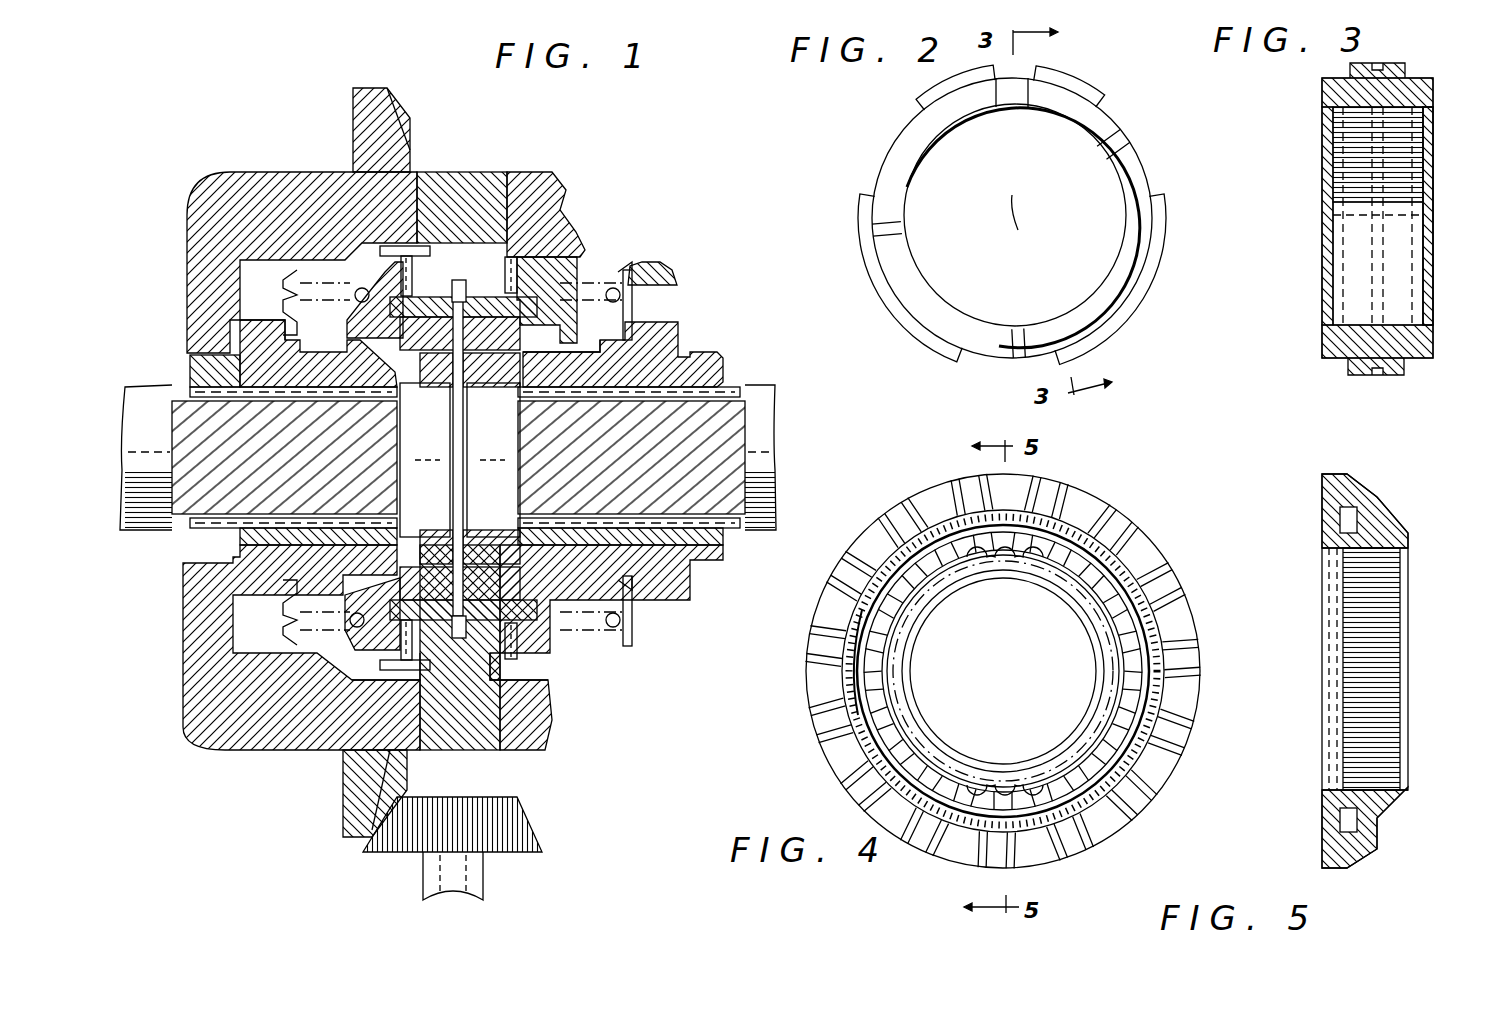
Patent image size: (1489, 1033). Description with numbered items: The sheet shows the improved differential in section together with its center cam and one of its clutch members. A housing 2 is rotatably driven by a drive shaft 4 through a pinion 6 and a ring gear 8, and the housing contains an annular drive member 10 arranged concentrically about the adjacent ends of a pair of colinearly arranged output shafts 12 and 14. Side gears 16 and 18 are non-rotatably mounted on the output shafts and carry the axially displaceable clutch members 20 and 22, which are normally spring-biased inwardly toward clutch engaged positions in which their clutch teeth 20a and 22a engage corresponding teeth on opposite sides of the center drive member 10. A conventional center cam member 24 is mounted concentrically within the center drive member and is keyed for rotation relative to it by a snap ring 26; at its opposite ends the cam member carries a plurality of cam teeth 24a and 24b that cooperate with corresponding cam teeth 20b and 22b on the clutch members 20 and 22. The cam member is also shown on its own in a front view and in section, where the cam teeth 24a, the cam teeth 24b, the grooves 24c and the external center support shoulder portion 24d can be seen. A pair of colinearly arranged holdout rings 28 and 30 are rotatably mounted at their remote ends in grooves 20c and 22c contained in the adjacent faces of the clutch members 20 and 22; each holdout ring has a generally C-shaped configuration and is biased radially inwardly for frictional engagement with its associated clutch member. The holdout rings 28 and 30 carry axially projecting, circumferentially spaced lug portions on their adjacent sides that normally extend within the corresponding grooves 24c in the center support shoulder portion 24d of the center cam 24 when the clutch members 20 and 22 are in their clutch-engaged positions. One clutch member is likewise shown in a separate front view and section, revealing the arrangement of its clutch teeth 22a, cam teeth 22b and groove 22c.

In FIG. 1, the housing 2 is at (232, 172).
In FIG. 1, the drive shaft 4 is at (485, 870).
In FIG. 1, the pinion 6 is at (510, 810).
In FIG. 1, the ring gear 8 is at (345, 776).
In FIG. 1, the annular drive member 10 is at (486, 172).
In FIG. 1, the output shaft 12 is at (150, 530).
In FIG. 1, the output shaft 14 is at (748, 530).
In FIG. 1, the side gear 16 is at (247, 373).
In FIG. 1, the side gear 18 is at (700, 376).
In FIG. 1, the clutch member 20 is at (383, 290).
In FIG. 1, the clutch teeth 20a is at (418, 262).
In FIG. 1, the cam teeth 20b is at (312, 349).
In FIG. 1, the groove 20c is at (386, 666).
In FIG. 1, the clutch member 22 is at (556, 276).
In FIG. 4, the clutch member 22 is at (1078, 500).
In FIG. 5, the clutch member 22 is at (1380, 535).
In FIG. 1, the clutch teeth 22a is at (500, 280).
In FIG. 4, the clutch teeth 22a is at (1130, 565).
In FIG. 5, the clutch teeth 22a is at (1324, 484).
In FIG. 1, the cam teeth 22b is at (561, 359).
In FIG. 4, the cam teeth 22b is at (940, 610).
In FIG. 5, the cam teeth 22b is at (1324, 806).
In FIG. 1, the groove 22c is at (522, 666).
In FIG. 4, the groove 22c is at (845, 685).
In FIG. 5, the groove 22c is at (1340, 828).
In FIG. 1, the center cam member 24 is at (470, 458).
In FIG. 2, the center cam member 24 is at (1077, 82).
In FIG. 3, the center cam member 24 is at (1428, 70).
In FIG. 1, the cam teeth 24a is at (404, 412).
In FIG. 2, the cam teeth 24a is at (1016, 100).
In FIG. 3, the cam teeth 24a is at (1324, 86).
In FIG. 1, the cam teeth 24b is at (468, 412).
In FIG. 3, the cam teeth 24b is at (1430, 92).
In FIG. 2, the grooves 24c is at (886, 142).
In FIG. 2, the center support shoulder portion 24d is at (1128, 318).
In FIG. 3, the center support shoulder portion 24d is at (1406, 370).
In FIG. 1, the snap ring 26 is at (463, 458).
In FIG. 1, the holdout ring 28 is at (451, 443).
In FIG. 1, the holdout ring 30 is at (548, 300).